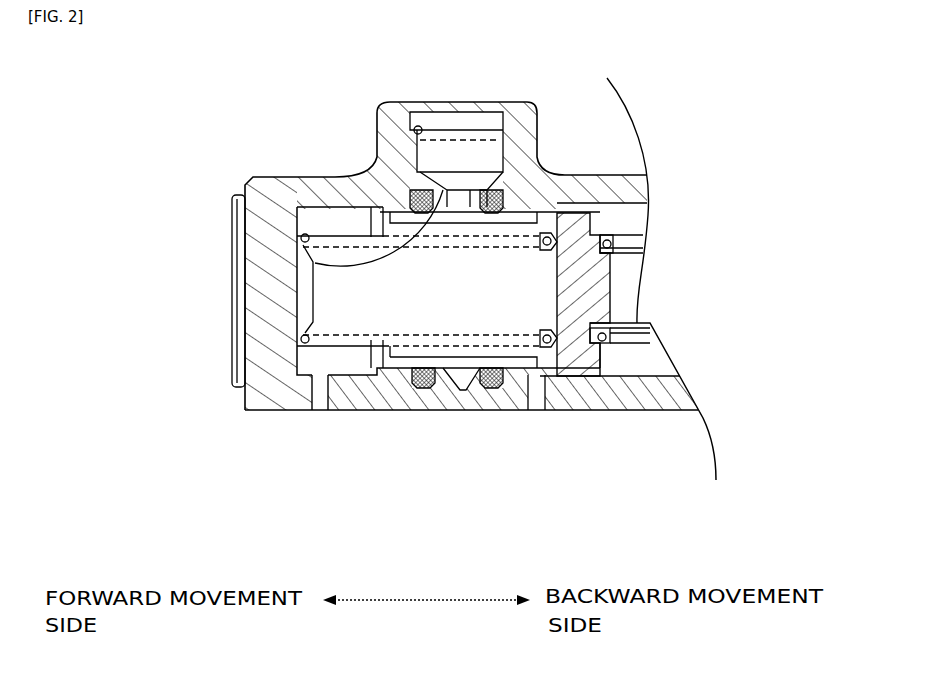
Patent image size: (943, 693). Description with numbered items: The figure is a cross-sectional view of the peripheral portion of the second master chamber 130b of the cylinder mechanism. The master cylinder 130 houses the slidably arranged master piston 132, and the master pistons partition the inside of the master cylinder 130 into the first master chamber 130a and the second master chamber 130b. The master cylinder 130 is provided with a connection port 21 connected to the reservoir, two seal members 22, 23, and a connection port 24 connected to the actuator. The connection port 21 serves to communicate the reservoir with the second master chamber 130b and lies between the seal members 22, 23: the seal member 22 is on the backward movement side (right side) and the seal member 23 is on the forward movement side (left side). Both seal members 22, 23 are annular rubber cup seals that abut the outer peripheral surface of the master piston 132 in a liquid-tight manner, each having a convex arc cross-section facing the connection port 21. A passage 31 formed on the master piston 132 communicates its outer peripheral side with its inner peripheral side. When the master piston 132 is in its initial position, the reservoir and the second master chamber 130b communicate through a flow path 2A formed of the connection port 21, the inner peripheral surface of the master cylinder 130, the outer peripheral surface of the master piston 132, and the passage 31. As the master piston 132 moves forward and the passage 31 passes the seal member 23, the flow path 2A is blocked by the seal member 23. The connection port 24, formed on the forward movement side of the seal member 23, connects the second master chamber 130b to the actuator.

The master cylinder 130 is at (257, 170).
The first master chamber 130a is at (628, 357).
The second master chamber 130b is at (358, 365).
The master piston 132 is at (557, 378).
The passage 31 is at (313, 263).
The flow path 2A is at (455, 200).
The connection port 21 is at (468, 200).
The seal member 22 is at (493, 188).
The seal member 23 is at (410, 196).
The connection port 24 is at (317, 401).